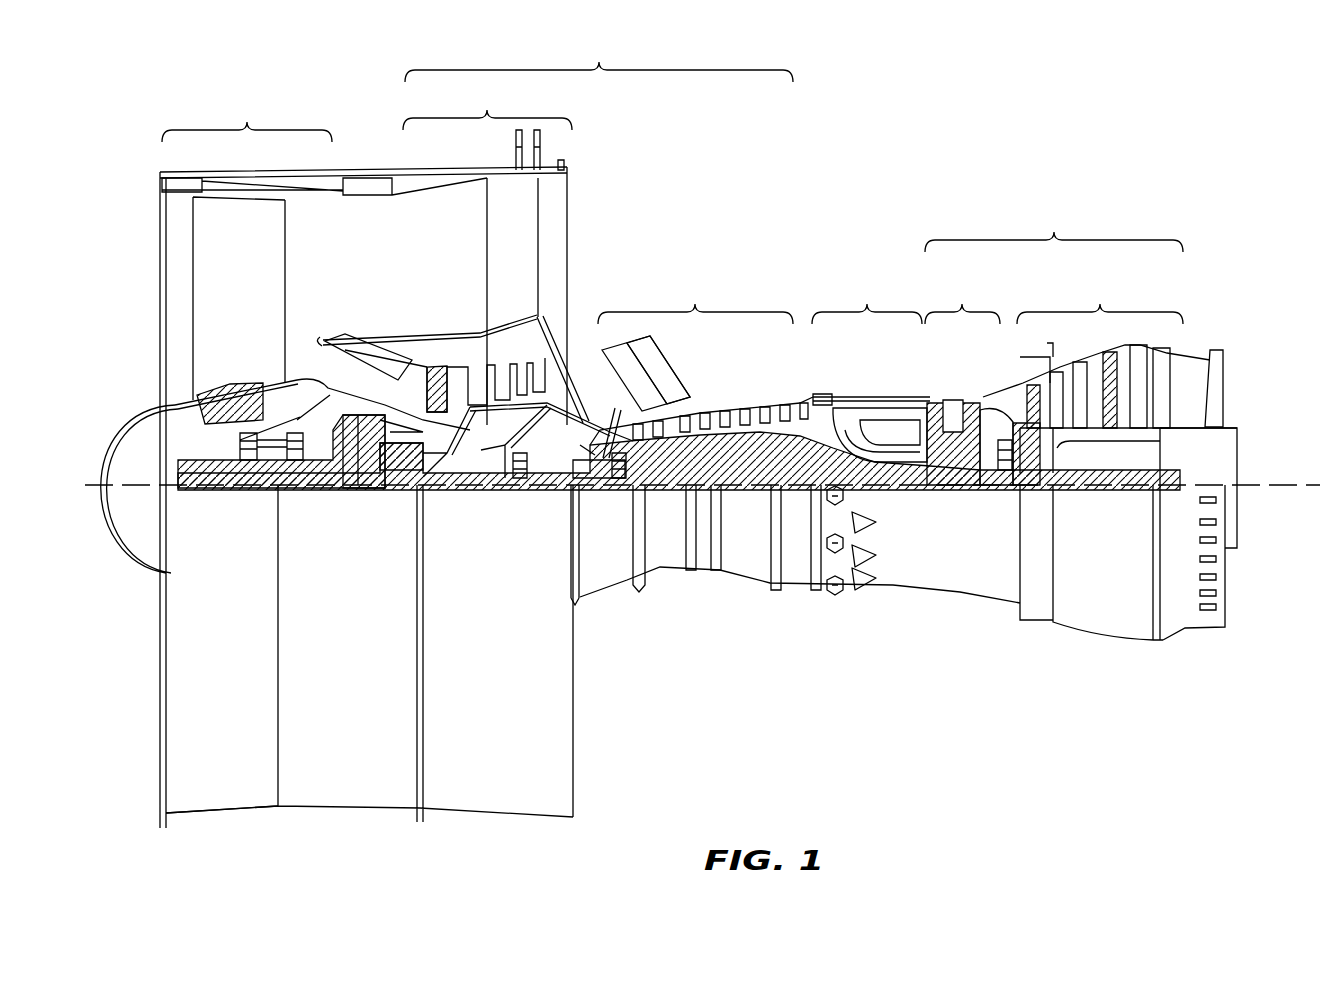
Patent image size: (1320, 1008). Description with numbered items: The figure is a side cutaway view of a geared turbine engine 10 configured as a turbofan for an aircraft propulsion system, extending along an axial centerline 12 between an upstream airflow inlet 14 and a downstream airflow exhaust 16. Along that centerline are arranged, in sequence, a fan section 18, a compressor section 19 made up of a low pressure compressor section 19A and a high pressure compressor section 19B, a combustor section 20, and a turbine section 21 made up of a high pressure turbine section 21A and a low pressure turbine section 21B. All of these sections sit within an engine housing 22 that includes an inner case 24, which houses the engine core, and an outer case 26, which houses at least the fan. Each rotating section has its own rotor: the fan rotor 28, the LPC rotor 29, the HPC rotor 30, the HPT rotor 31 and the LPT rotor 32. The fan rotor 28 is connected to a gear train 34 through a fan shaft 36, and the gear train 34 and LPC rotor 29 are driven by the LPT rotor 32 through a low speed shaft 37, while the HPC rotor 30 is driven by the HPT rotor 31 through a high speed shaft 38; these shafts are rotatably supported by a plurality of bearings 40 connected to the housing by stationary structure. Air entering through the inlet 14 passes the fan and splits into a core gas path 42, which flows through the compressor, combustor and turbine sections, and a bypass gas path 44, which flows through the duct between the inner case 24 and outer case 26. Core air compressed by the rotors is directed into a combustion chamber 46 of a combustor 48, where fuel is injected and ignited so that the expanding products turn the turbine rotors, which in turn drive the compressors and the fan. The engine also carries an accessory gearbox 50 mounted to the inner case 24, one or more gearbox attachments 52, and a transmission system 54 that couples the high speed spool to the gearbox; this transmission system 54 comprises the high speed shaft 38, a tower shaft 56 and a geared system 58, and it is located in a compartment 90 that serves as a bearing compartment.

The geared turbine engine 10 is at (128, 146).
The axial centerline 12 is at (1290, 490).
The airflow inlet 14 is at (158, 243).
The airflow exhaust 16 is at (1233, 380).
The fan section 18 is at (247, 115).
The compressor section 19 is at (599, 54).
The low pressure compressor section 19A is at (487, 101).
The high pressure compressor section 19B is at (695, 296).
The combustor section 20 is at (867, 298).
The turbine section 21 is at (1054, 224).
The high pressure turbine section 21A is at (962, 298).
The low pressure turbine section 21B is at (1100, 298).
The engine housing 22 is at (592, 603).
The inner case 24 is at (792, 590).
The outer case 26 is at (512, 817).
The fan rotor 28 is at (205, 418).
The LPC rotor 29 is at (478, 456).
The HPC rotor 30 is at (751, 455).
The HPT rotor 31 is at (956, 490).
The LPT rotor 32 is at (1097, 445).
The gear train 34 is at (368, 490).
The fan shaft 36 is at (232, 490).
The low speed shaft 37 is at (1110, 490).
The high speed shaft 38 is at (887, 468).
The bearings 40 is at (247, 492).
The core gas path 42 is at (386, 376).
The bypass gas path 44 is at (390, 262).
The combustion chamber 46 is at (877, 423).
The combustor 48 is at (907, 412).
The accessory gearbox 50 is at (633, 355).
The gearbox attachments 52 is at (662, 383).
The transmission system 54 is at (596, 418).
The tower shaft 56 is at (660, 418).
The geared system 58 is at (590, 500).
The compartment 90 is at (577, 452).